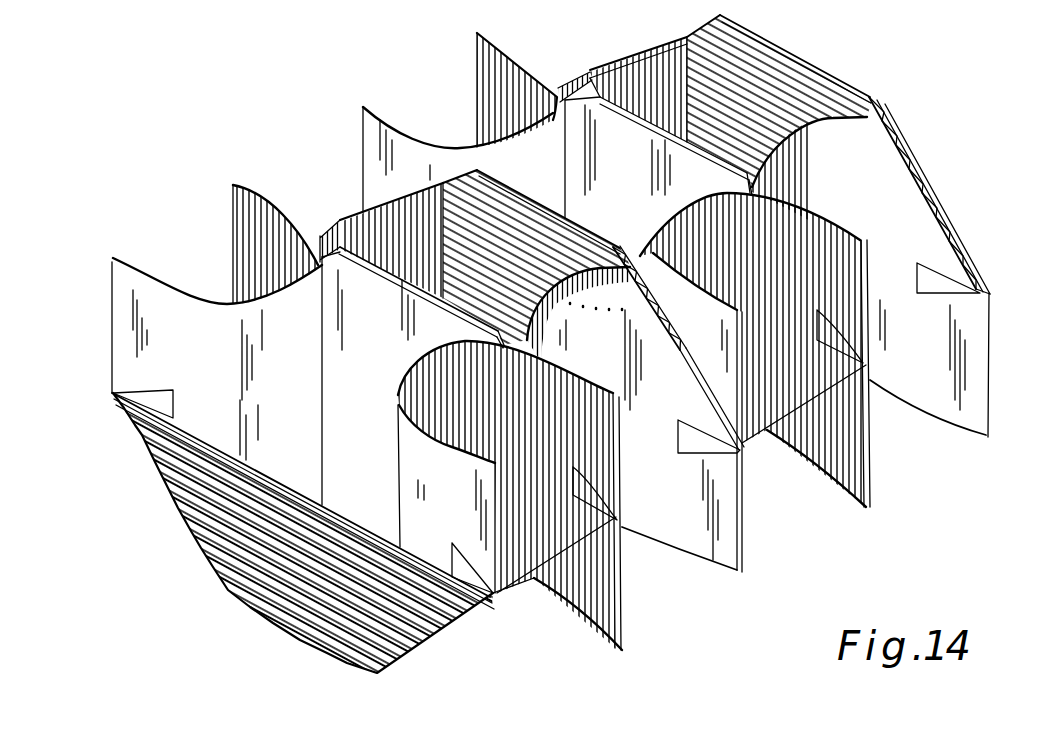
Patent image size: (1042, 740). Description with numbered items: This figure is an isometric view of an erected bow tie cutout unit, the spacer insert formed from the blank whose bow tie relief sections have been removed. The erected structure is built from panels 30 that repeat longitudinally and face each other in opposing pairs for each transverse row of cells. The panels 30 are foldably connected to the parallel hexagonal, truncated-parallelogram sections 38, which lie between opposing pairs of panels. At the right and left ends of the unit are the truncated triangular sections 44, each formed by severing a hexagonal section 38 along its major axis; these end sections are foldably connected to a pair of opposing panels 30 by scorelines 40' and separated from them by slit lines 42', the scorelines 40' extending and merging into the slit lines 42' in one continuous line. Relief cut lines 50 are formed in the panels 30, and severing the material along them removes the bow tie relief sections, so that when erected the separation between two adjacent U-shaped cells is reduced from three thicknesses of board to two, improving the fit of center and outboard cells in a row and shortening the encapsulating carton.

The panel 30 is at (407, 181).
The hexagonal, truncated-parallelogram section 38 is at (356, 327).
The truncated triangular section 44 is at (787, 52).
The relief cut line 50 is at (113, 393).
The slit line 42' is at (926, 194).
The scoreline 40' is at (943, 199).